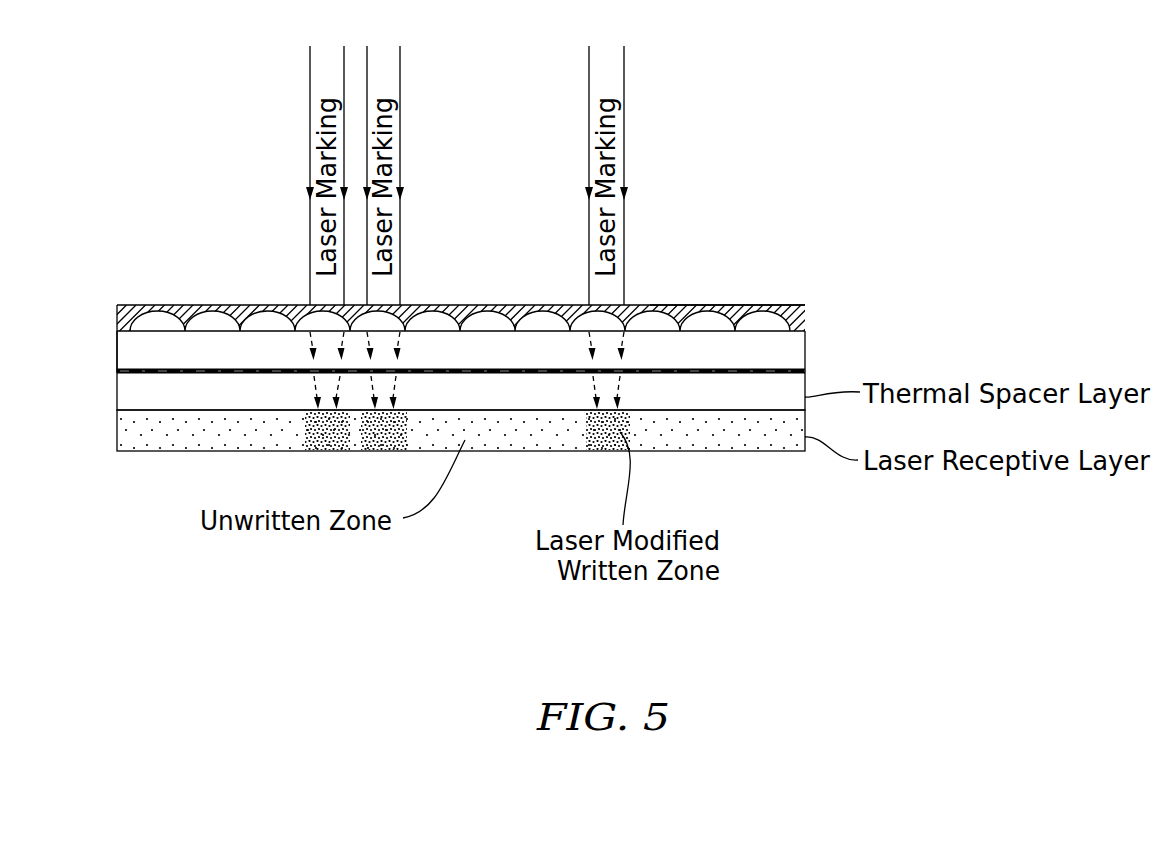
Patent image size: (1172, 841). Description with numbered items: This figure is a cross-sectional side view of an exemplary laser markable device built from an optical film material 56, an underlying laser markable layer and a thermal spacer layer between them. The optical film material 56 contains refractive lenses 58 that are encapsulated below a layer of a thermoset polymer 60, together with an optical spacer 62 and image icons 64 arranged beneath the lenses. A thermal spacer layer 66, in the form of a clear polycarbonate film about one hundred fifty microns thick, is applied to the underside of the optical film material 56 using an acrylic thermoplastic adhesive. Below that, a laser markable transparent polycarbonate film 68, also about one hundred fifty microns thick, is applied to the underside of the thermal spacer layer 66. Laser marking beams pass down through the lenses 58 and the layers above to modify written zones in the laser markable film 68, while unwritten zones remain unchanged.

The optical film material 56 is at (110, 305).
The refractive lenses 58 is at (720, 317).
The layer of a thermoset polymer 60 is at (685, 307).
The optical spacer 62 is at (215, 355).
The image icons 64 is at (147, 377).
The thermal spacer layer 66 is at (526, 395).
The laser markable transparent polycarbonate film 68 is at (733, 438).